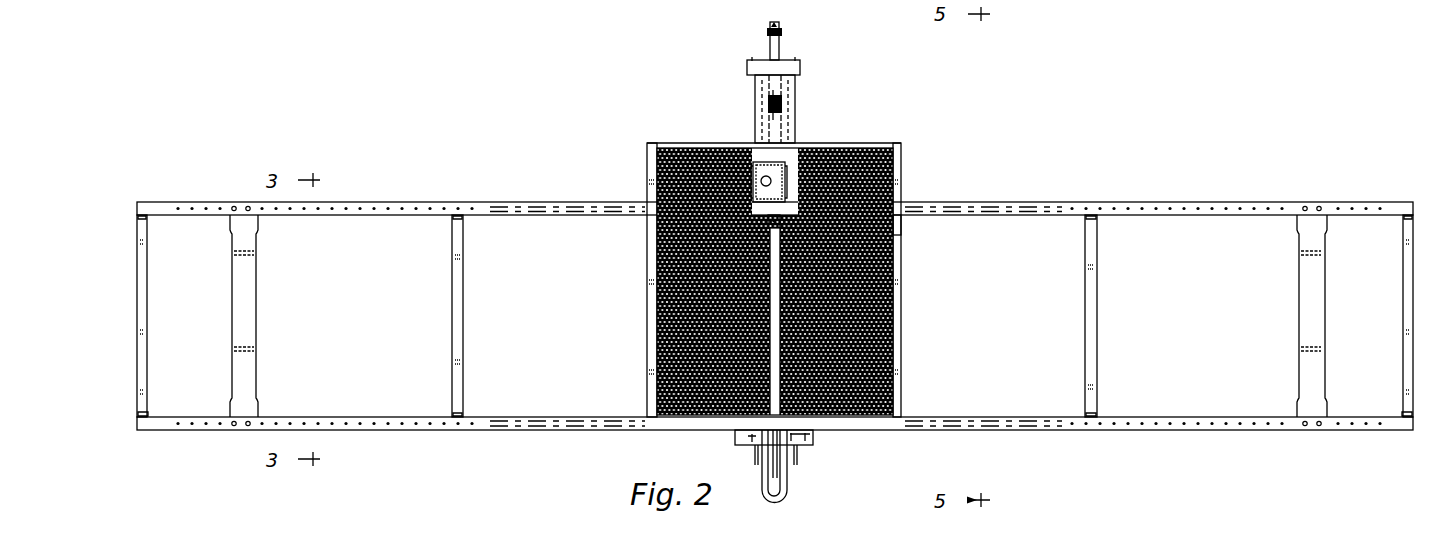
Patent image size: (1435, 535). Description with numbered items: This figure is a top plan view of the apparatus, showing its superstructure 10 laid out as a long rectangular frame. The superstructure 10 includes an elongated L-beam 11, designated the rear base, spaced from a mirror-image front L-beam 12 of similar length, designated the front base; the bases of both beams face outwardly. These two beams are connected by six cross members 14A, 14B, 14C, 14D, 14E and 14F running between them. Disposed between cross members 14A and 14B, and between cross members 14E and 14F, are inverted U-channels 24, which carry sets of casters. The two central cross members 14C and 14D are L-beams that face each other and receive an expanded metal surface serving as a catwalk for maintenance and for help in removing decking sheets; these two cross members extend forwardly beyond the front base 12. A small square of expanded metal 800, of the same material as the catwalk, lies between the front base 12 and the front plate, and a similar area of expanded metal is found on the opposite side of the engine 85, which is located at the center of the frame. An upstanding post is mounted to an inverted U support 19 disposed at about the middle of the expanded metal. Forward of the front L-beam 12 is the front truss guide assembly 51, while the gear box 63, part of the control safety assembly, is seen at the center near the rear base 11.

The superstructure 10 is at (433, 143).
The elongated L-beam 11 is at (923, 430).
The front L-beam 12 is at (1044, 203).
The cross member 14A is at (147, 275).
The cross member 14B is at (452, 301).
The cross member 14C is at (647, 312).
The cross member 14D is at (901, 276).
The cross member 14E is at (1097, 300).
The cross member 14F is at (1403, 343).
The inverted U support 19 is at (890, 228).
The inverted U-channel 24 is at (258, 293).
The front truss guide assembly 51 is at (800, 39).
The gear box 63 is at (790, 479).
The engine 85 is at (781, 163).
The expanded metal 800 is at (707, 146).